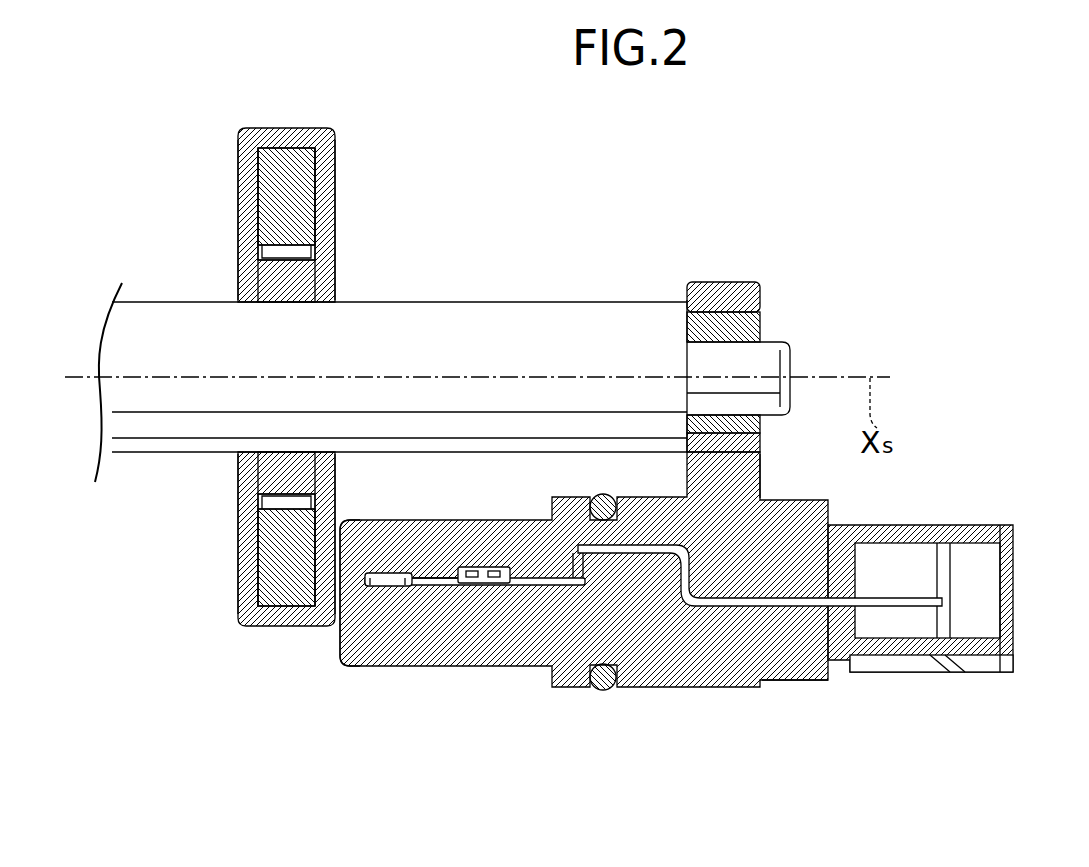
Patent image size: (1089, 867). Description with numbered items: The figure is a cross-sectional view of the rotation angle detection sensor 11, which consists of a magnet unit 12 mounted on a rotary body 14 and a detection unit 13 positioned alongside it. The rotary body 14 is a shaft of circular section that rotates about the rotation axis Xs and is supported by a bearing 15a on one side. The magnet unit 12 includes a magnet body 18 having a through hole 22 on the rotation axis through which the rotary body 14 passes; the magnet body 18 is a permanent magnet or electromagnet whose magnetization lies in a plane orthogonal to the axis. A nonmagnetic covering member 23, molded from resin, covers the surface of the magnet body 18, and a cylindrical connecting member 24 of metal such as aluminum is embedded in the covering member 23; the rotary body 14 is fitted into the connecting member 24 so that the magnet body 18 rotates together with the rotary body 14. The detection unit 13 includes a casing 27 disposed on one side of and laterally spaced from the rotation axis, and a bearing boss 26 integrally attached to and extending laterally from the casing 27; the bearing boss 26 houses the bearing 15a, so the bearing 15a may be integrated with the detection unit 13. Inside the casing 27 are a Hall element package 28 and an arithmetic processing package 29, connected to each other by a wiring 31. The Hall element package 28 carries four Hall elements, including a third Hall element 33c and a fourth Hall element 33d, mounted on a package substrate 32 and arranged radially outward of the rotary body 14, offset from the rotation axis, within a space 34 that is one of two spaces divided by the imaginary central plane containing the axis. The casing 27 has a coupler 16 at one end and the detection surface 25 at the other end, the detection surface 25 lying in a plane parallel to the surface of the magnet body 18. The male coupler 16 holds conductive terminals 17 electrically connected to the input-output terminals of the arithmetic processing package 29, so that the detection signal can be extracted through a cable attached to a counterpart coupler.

The rotation angle detection sensor 11 is at (918, 307).
The magnet unit 12 is at (268, 204).
The detection unit 13 is at (677, 692).
The rotary body 14 is at (495, 318).
The bearing 15a is at (760, 330).
The coupler 16 is at (960, 525).
The terminals 17 is at (917, 597).
The magnet body 18 is at (302, 198).
The through hole 22 is at (300, 260).
The covering member 23 is at (240, 205).
The connecting member 24 is at (237, 458).
The detection surface 25 is at (335, 640).
The bearing boss 26 is at (722, 282).
The casing 27 is at (790, 682).
The Hall element package 28 is at (405, 590).
The arithmetic processing package 29 is at (490, 590).
The wiring 31 is at (440, 590).
The package substrate 32 is at (387, 585).
The third Hall element 33c is at (402, 570).
The fourth Hall element 33d is at (378, 575).
The space 34 is at (838, 436).